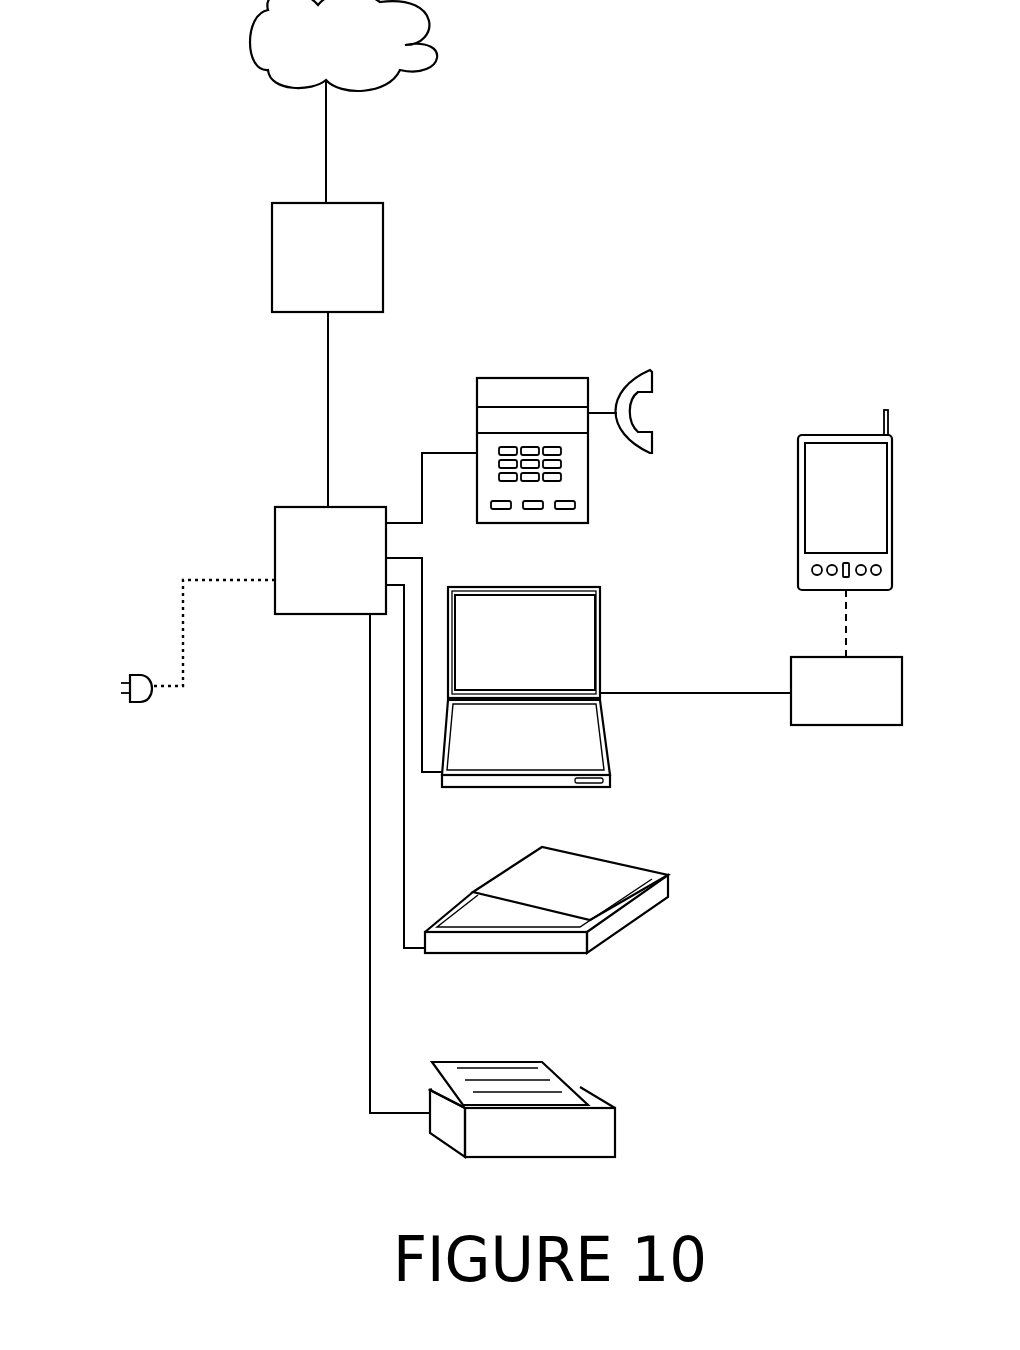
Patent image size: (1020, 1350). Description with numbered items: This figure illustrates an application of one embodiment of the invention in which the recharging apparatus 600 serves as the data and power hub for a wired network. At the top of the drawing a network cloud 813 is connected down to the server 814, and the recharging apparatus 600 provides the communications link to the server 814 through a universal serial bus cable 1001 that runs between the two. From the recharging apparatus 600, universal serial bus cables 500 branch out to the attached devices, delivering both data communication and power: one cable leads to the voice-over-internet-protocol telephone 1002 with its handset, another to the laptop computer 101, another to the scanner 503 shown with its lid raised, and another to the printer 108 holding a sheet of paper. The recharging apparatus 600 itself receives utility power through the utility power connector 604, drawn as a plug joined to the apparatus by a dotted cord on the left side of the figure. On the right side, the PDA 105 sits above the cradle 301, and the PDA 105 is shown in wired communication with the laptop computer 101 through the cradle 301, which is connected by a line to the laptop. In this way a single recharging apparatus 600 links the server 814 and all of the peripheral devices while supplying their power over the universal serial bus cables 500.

The network cloud 813 is at (360, 55).
The server 814 is at (345, 271).
The universal serial bus cable 1001 is at (330, 400).
The recharging apparatus 600 is at (346, 574).
The utility power connector 604 is at (238, 578).
The universal serial bus cables 500 is at (422, 506).
The voice-over-internet-protocol telephone 1002 is at (658, 352).
The laptop computer 101 is at (540, 655).
The PDA 105 is at (862, 530).
The cradle 301 is at (862, 705).
The scanner 503 is at (588, 894).
The printer 108 is at (558, 1143).